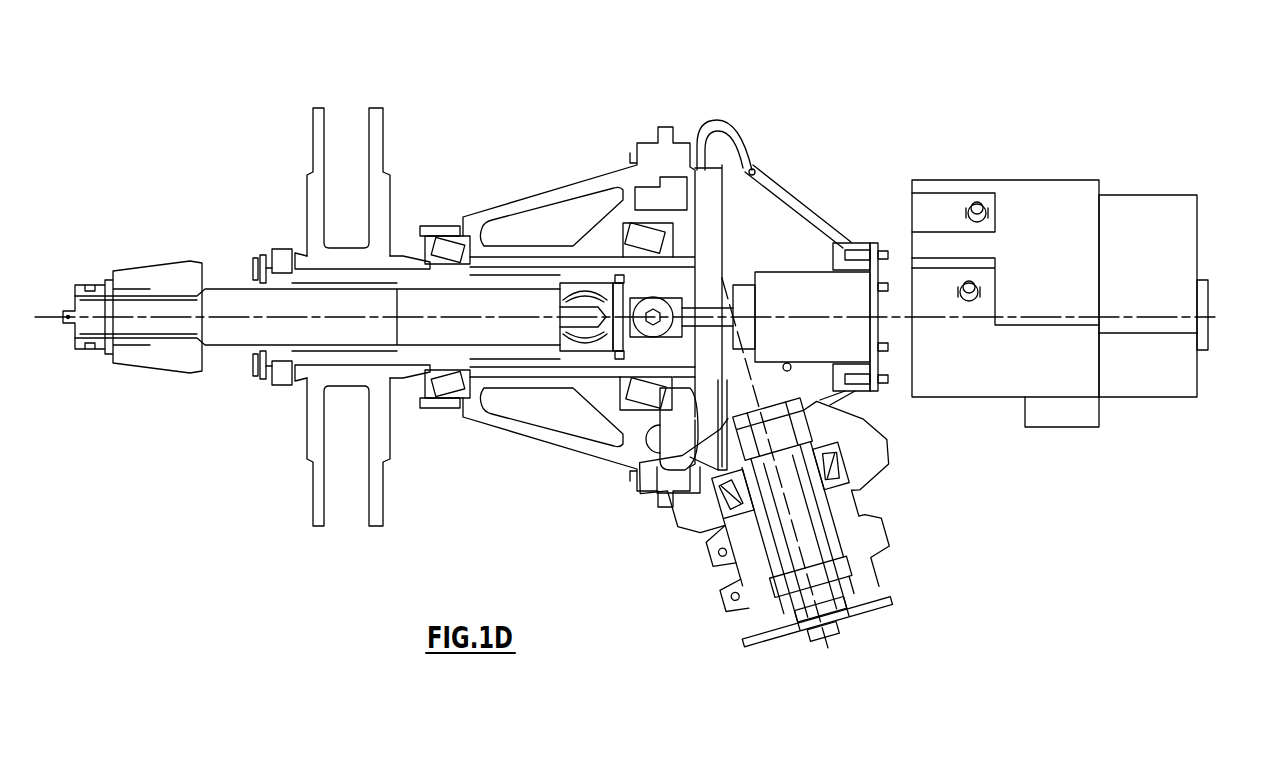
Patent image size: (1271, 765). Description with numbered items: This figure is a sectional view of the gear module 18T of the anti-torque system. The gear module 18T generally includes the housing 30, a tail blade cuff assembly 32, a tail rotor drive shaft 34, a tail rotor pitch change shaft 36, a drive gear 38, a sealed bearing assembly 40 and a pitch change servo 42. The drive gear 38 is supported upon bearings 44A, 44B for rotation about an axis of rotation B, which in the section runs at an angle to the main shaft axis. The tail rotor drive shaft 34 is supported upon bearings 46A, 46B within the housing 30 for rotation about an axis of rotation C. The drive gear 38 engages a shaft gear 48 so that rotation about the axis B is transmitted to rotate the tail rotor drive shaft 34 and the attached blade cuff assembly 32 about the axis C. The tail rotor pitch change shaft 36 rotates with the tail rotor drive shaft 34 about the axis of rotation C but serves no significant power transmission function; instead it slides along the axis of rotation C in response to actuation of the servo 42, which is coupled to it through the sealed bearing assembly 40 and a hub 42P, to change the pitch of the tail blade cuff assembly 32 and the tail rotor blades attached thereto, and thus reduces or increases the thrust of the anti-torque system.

The gear module 18T is at (757, 123).
The tail blade cuff assembly 32 is at (383, 146).
The tail rotor drive shaft 34 is at (377, 356).
The tail rotor pitch change shaft 36 is at (230, 346).
The bearing 46B is at (443, 248).
The bearing 46A is at (645, 240).
The shaft gear 48 is at (753, 170).
The housing 30 is at (786, 190).
The sealed bearing assembly 40 is at (605, 358).
The output hub 42P is at (673, 305).
The pitch change servo 42 is at (1017, 196).
The drive gear 38 is at (835, 415).
The bearing 44A is at (737, 583).
The bearing 44B is at (710, 533).
The axis of rotation C is at (123, 318).
The axis of rotation B is at (829, 646).